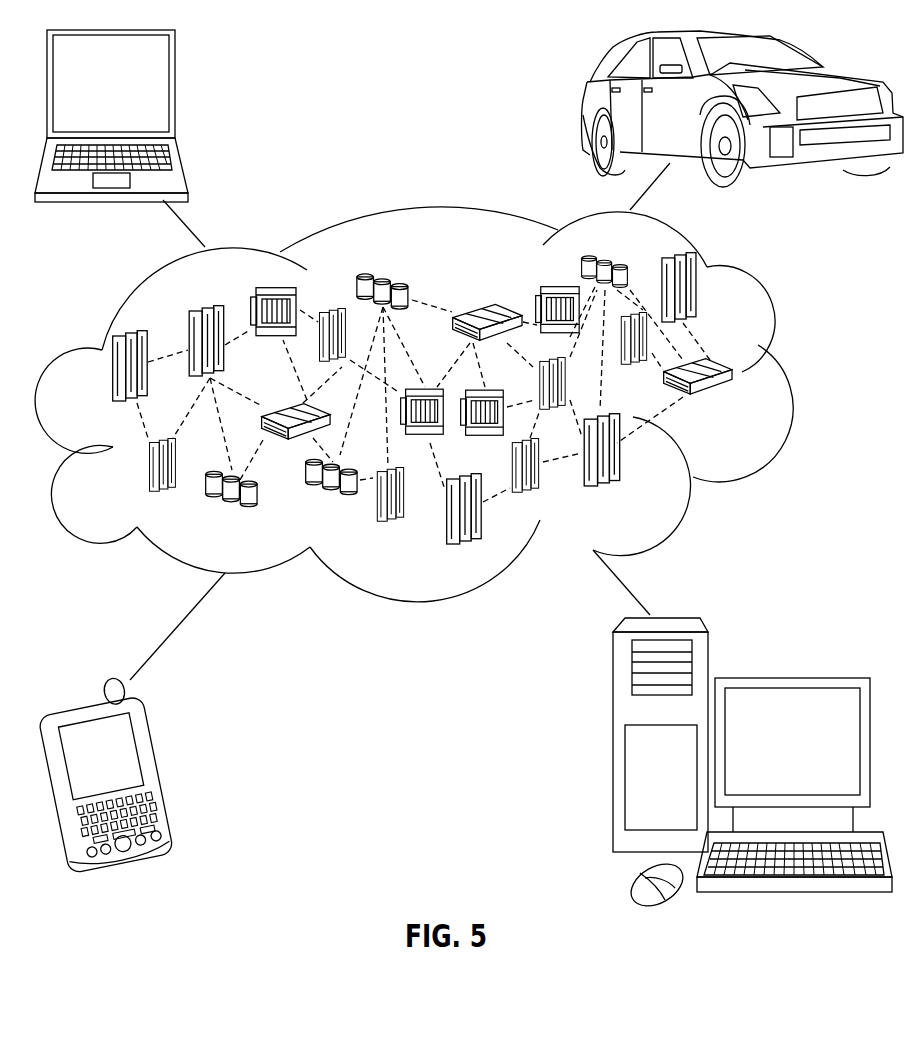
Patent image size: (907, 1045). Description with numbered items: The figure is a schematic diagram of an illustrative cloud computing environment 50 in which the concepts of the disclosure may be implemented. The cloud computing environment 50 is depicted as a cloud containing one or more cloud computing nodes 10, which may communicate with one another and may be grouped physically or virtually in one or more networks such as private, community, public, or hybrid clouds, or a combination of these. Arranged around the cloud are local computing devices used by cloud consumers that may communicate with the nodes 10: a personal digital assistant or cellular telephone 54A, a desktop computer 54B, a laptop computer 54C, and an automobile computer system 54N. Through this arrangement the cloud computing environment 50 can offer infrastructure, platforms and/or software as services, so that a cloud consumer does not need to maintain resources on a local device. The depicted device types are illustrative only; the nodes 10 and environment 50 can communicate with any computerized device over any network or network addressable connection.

The cloud computing environment 50 is at (790, 377).
The cloud computing nodes 10 is at (744, 414).
The personal digital assistant or cellular telephone 54A is at (167, 772).
The desktop computer 54B is at (790, 674).
The laptop computer 54C is at (176, 92).
The automobile computer system 54N is at (587, 106).